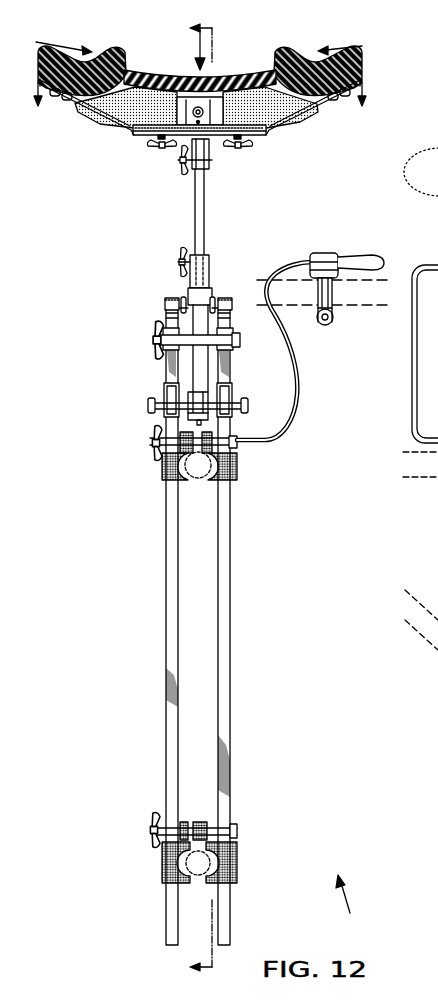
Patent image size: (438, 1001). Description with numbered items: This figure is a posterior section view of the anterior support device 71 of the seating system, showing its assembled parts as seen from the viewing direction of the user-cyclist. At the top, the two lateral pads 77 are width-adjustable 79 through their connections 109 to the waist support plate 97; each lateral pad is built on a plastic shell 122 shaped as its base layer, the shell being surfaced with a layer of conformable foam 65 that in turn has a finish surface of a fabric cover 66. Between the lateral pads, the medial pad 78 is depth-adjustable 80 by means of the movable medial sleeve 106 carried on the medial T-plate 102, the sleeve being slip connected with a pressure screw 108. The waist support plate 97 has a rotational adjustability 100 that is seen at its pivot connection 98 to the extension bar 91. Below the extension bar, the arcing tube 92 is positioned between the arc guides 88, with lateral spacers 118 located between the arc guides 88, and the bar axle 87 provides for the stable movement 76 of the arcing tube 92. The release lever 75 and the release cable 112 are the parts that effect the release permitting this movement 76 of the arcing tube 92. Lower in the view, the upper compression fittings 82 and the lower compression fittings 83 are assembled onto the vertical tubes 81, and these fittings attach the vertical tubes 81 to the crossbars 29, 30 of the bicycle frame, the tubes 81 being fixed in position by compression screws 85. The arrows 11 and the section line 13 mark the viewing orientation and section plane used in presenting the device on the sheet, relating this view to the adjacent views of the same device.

The direction arrow 11 is at (47, 107).
The section line 13- 13 is at (214, 497).
The crossbar 29 is at (198, 480).
The crossbar 30 is at (198, 876).
The conformable foam 65 is at (364, 66).
The fabric cover 66 is at (358, 52).
The anterior support device 71 is at (352, 907).
The release lever 75 is at (328, 256).
The movement 76 is at (131, 363).
The lateral pads 77 is at (102, 54).
The medial pad 78 is at (233, 72).
The width adjustability 79 is at (67, 41).
The depth adjustability 80 is at (194, 55).
The vertical tubes 81 is at (165, 595).
The upper compression fittings 82 is at (165, 460).
The lower compression fittings 83 is at (164, 866).
The compression screws 85 is at (153, 432).
The bar axle 87 is at (150, 408).
The arc guides 88 is at (165, 300).
The extension bar 91 is at (206, 222).
The arcing tube 92 is at (190, 390).
The waist support plate 97 is at (262, 137).
The pivot connection 98 is at (206, 194).
The rotational adjustability 100 is at (166, 156).
The medial T-plate 102 is at (212, 142).
The movable medial sleeve 106 is at (123, 123).
The pressure screw 108 is at (192, 106).
The connections 109 is at (60, 100).
The release cable 112 is at (293, 270).
The lateral spacers 118 is at (178, 262).
The plastic shells 122 is at (364, 80).